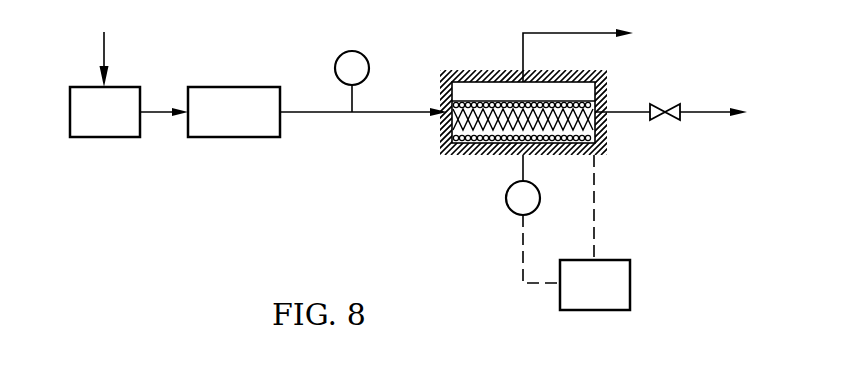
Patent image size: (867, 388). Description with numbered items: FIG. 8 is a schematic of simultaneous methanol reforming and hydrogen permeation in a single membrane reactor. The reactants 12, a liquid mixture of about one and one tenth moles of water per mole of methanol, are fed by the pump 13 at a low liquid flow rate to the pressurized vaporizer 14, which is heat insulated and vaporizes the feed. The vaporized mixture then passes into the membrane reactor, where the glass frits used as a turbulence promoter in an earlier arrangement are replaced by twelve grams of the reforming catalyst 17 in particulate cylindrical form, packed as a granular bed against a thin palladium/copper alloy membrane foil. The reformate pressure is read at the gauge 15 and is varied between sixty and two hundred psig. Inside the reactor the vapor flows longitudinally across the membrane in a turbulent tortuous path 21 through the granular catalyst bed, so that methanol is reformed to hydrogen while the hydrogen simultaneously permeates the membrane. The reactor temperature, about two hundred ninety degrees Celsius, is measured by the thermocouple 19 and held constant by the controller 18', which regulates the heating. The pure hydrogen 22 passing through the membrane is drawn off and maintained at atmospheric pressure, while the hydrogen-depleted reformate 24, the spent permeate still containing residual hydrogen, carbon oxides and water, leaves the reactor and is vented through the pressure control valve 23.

The reactants 12 is at (106, 46).
The pump 13 is at (122, 122).
The pressurized vaporizer 14 is at (249, 122).
The gauge 15 is at (342, 53).
The reforming catalyst 17 is at (482, 146).
The controller 18' is at (576, 232).
The thermocouple 19 is at (509, 211).
The tortuous path 21 is at (500, 108).
The pure hydrogen 22 is at (597, 53).
The pressure control valve 23 is at (662, 106).
The hydrogen-depleted reformate 24 is at (731, 115).